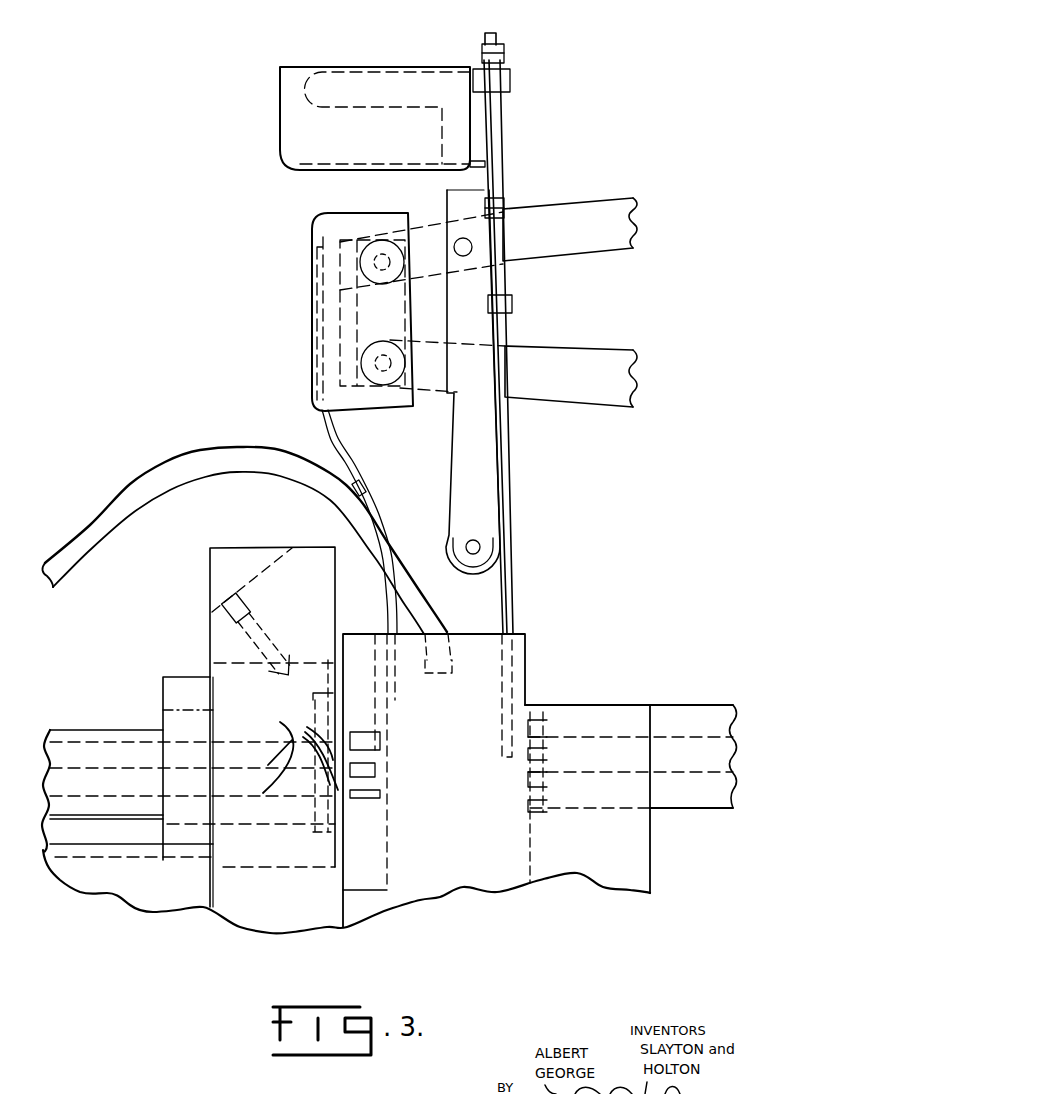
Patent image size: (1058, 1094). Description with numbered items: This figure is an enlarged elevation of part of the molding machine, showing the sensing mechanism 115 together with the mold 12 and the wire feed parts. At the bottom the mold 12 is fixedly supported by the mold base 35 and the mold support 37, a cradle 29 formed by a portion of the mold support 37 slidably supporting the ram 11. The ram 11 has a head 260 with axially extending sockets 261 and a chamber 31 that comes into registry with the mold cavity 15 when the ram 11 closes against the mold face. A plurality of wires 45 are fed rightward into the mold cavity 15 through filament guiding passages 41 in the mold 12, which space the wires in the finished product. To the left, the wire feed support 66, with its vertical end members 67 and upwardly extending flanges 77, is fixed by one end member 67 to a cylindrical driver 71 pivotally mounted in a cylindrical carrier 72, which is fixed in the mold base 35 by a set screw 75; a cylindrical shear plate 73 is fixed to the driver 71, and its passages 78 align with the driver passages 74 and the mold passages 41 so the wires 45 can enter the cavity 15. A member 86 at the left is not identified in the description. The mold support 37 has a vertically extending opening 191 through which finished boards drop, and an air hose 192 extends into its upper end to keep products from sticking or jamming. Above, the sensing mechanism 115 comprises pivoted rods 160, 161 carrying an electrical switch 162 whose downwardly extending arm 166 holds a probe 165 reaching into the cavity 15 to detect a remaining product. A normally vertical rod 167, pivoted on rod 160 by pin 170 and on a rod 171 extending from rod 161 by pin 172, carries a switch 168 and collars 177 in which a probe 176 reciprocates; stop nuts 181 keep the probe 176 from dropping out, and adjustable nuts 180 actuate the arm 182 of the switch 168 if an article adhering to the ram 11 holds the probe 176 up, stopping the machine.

The sensing mechanism 115 is at (196, 166).
The switch 168 is at (298, 80).
The arm 182 is at (470, 172).
The probe 176 is at (506, 564).
The stop nuts 181 is at (505, 60).
The collars 177 is at (510, 87).
The nuts 180 is at (507, 212).
The normally vertical rod 167 is at (473, 184).
The rod 171 is at (449, 527).
The pin 172 is at (473, 555).
The pin 170 is at (455, 244).
The electrical switch 162 is at (323, 228).
The rod 160 is at (590, 206).
The rod 161 is at (566, 354).
The air tube or hose 192 is at (143, 483).
The downwardly extending arm 166 is at (338, 460).
The probe 165 is at (364, 489).
The cylindrical carrier 72 is at (305, 669).
The set screw 75 is at (265, 633).
The cylindrical shear plate 73 is at (332, 702).
The cylindrical driver 71 is at (254, 690).
The vertical end members 67 is at (177, 679).
The rail 86 is at (90, 722).
The upwardly extending flanges 77 is at (125, 852).
The wire feed support 66 is at (160, 900).
The passages 74 is at (197, 797).
The wires or filaments 45 is at (274, 751).
The passages 78 is at (315, 748).
The filament guiding passages 41 is at (351, 735).
The mold cavity 15 is at (368, 777).
The mold 12 is at (385, 843).
The vertically extending opening 191 is at (487, 877).
The mold base 35 is at (332, 917).
The mold support 37 is at (580, 867).
The ram 11 is at (694, 708).
The sockets 261 is at (548, 770).
The head 260 is at (537, 820).
The cradle 29 is at (603, 804).
The chamber 31 is at (692, 762).